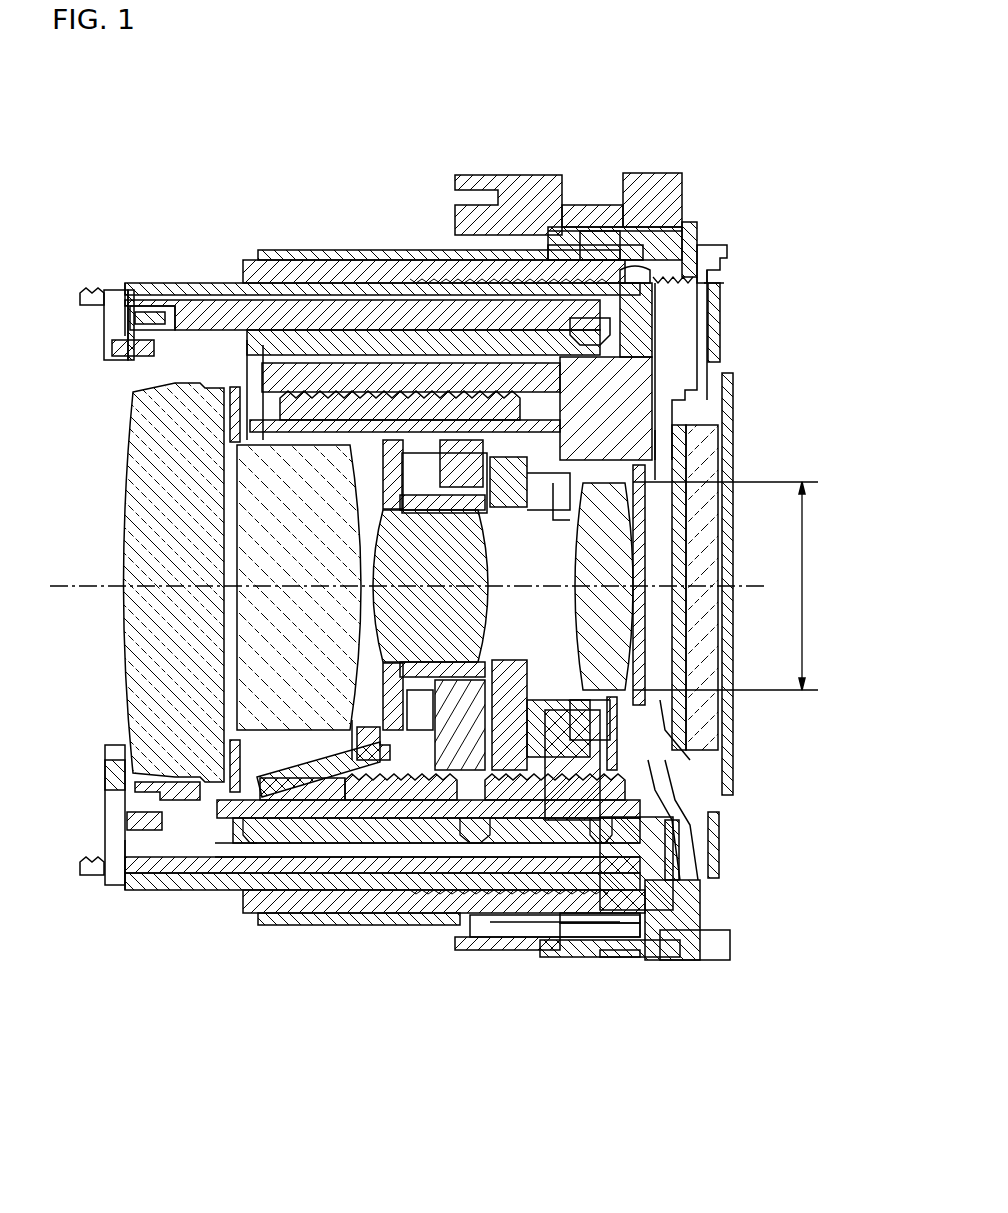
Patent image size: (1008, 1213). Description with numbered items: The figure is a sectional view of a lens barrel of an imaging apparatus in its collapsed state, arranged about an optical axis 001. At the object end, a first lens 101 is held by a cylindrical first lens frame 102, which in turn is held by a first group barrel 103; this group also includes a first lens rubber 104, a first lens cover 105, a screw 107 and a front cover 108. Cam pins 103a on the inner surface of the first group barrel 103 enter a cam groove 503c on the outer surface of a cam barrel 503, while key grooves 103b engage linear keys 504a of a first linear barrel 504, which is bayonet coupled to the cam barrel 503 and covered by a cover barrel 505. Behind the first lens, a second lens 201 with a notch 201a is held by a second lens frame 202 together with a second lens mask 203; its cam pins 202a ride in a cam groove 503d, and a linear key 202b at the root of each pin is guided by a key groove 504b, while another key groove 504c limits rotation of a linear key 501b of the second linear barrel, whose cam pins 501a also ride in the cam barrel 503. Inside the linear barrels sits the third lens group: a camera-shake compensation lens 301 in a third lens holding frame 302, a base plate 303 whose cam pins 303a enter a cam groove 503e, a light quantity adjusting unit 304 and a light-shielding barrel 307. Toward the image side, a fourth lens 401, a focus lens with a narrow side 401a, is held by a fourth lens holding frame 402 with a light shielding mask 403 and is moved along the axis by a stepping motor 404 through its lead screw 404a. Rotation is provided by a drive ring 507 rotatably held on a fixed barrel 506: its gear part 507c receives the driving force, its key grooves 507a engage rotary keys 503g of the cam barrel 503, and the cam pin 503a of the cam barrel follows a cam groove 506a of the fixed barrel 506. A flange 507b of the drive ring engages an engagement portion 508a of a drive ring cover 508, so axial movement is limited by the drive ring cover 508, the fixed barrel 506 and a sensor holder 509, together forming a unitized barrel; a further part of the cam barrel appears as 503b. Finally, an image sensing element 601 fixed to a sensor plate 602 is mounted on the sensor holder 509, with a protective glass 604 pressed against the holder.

The optical axis 001 is at (90, 586).
The first lens 101 is at (165, 492).
The first lens frame 102 is at (152, 318).
The first group barrel 103 is at (200, 288).
The cam pin 103a is at (590, 230).
The key groove 103b is at (250, 880).
The first lens rubber 104 is at (125, 820).
The first lens cover 105 is at (88, 300).
The screw 107 is at (130, 350).
The front cover 108 is at (110, 780).
The second lens 201 is at (255, 350).
The notch 201a is at (235, 452).
The second lens frame 202 is at (285, 815).
The cam pin 202a is at (380, 396).
The linear key 202b is at (330, 300).
The second lens mask 203 is at (170, 800).
The camera-shake compensation lens 301 is at (387, 533).
The third lens holding frame 302 is at (440, 360).
The base plate 303 is at (450, 780).
The cam pin 303a is at (545, 760).
The light quantity adjusting unit 304 is at (590, 880).
The light-shielding barrel 307 is at (378, 765).
The fourth lens 401 is at (690, 425).
The narrow side 401a is at (725, 586).
The fourth lens holding frame 402 is at (728, 398).
The light shielding mask 403 is at (685, 755).
The stepping motor 404 is at (715, 345).
The lead screw 404a is at (718, 298).
The cam pin 501a is at (682, 935).
The linear key 501b is at (505, 775).
The cam barrel 503 is at (480, 250).
The cam pin 503a is at (652, 262).
The cam barrel lower portion 503b is at (690, 870).
The cam groove 503c is at (545, 245).
The cam groove 503d is at (455, 345).
The cam groove 503e is at (560, 957).
The rotary key 503g is at (705, 935).
The first linear barrel 504 is at (325, 822).
The linear key 504a is at (240, 795).
The key groove 504b is at (465, 440).
The key groove 504c is at (375, 842).
The cover barrel 505 is at (215, 312).
The fixed barrel 506 is at (697, 262).
The cam groove 506a is at (680, 200).
The drive ring 507 is at (500, 948).
The key groove 507a is at (612, 955).
The flange 507b is at (562, 945).
The gear part 507c is at (600, 250).
The drive ring cover 508 is at (505, 230).
The engagement portion 508a is at (590, 928).
The sensor holder 509 is at (710, 265).
The image sensing element 601 is at (700, 660).
The sensor plate 602 is at (720, 840).
The protective glass 604 is at (702, 500).